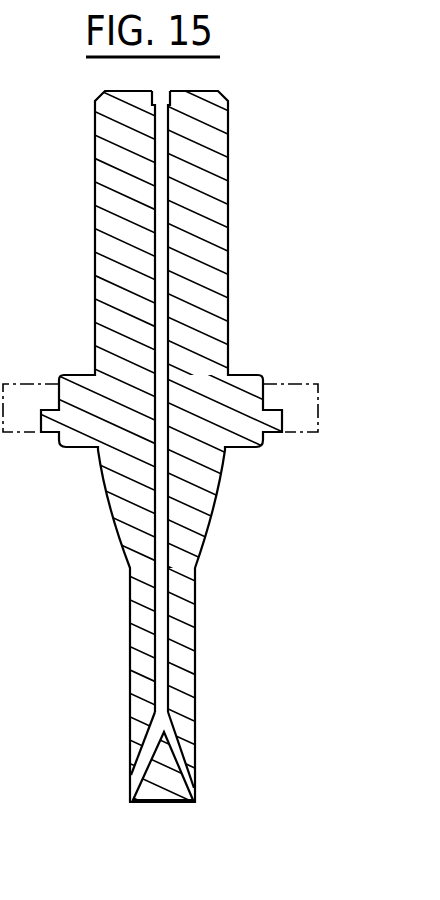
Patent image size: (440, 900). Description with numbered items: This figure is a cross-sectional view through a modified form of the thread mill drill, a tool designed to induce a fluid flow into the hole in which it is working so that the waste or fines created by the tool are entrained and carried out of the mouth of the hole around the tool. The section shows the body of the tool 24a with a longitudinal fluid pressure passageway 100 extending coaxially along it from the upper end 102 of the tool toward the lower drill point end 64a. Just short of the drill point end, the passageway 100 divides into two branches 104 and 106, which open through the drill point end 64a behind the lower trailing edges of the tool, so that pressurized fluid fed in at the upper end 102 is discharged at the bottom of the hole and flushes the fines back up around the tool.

The nozzle body 24a is at (233, 321).
The longitudinal fluid pressure passageway 100 is at (168, 198).
The upper end 102 is at (204, 91).
The branch 104 is at (137, 766).
The branch 106 is at (187, 759).
The lower drill point end 64a is at (171, 804).